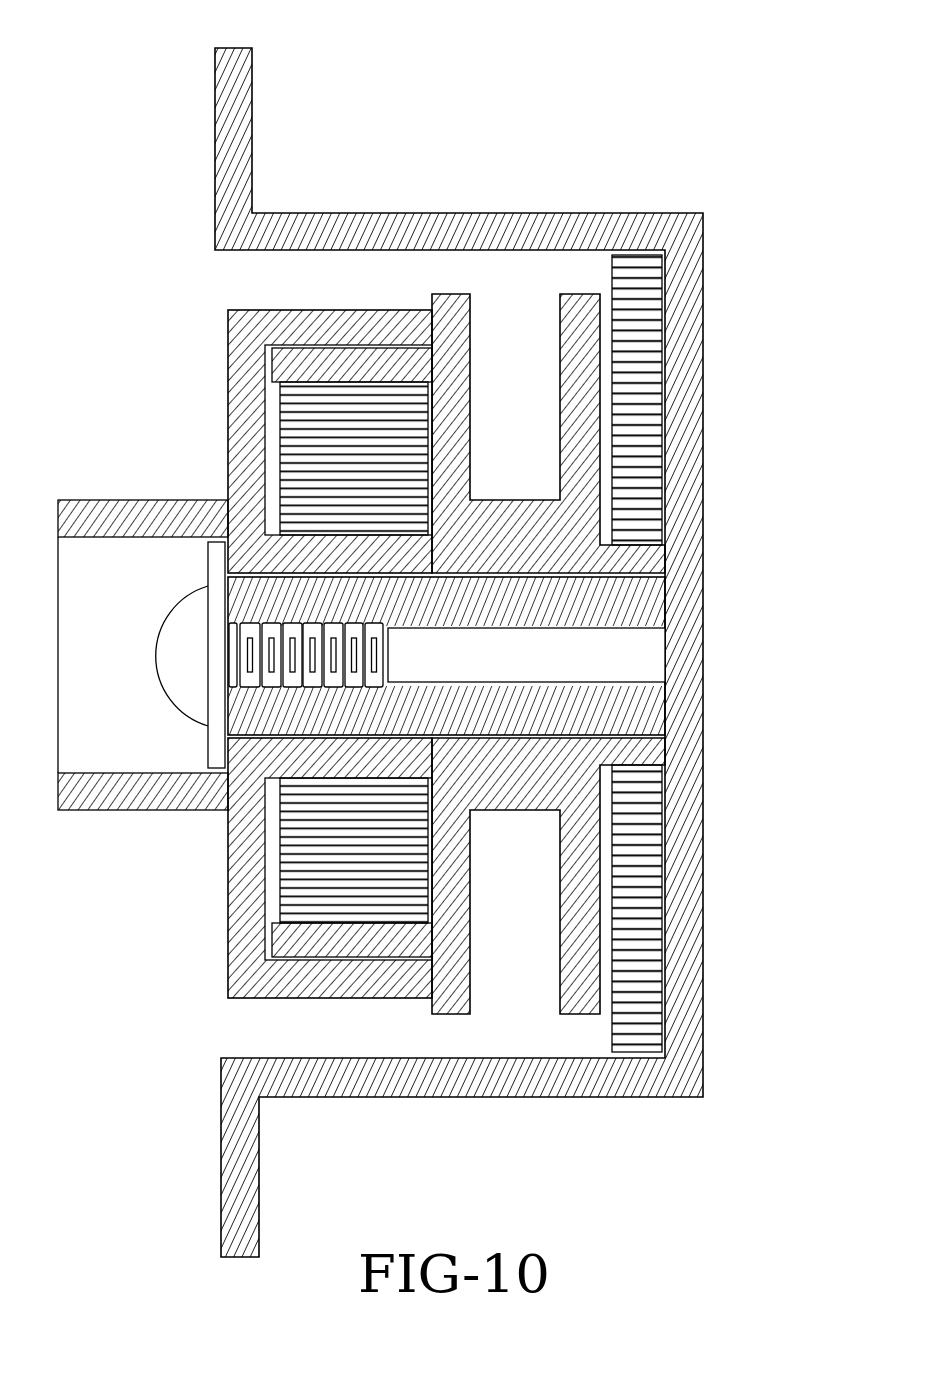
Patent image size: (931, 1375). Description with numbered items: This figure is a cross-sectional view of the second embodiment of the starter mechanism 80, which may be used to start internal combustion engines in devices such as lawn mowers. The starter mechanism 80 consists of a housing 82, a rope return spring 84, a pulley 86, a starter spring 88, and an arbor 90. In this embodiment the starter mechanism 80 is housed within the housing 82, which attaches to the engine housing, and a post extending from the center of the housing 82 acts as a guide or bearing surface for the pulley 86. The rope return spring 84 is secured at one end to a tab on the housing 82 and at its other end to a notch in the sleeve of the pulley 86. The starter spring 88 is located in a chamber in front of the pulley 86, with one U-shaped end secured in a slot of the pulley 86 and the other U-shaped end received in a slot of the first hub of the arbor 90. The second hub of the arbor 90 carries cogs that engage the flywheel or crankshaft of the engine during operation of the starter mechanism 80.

The starter mechanism 80 is at (93, 99).
The housing 82 is at (701, 287).
The rope return spring 84 is at (634, 280).
The pulley 86 is at (447, 293).
The starter spring 88 is at (297, 445).
The arbor 90 is at (230, 312).